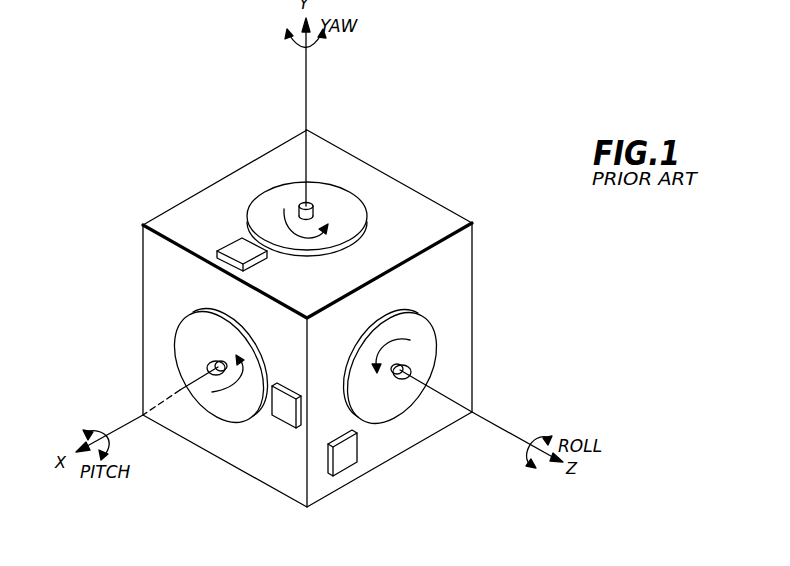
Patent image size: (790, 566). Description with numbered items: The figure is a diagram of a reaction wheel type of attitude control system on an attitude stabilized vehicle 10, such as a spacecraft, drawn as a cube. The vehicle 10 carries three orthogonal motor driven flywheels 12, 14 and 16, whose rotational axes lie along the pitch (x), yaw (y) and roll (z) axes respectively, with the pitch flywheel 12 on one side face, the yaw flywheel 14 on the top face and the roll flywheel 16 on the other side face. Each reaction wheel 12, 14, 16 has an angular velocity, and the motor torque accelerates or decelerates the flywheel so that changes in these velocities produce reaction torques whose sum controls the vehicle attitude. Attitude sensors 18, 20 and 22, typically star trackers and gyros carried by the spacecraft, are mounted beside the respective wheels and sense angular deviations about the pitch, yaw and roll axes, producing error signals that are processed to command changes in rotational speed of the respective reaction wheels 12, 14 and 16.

The attitude stabilized vehicle 10 is at (387, 182).
The motor driven flywheel 12 is at (188, 333).
The motor driven flywheel 14 is at (352, 228).
The motor driven flywheel 16 is at (433, 327).
The attitude sensor 18 is at (282, 413).
The attitude sensor 20 is at (222, 247).
The attitude sensor 22 is at (348, 458).